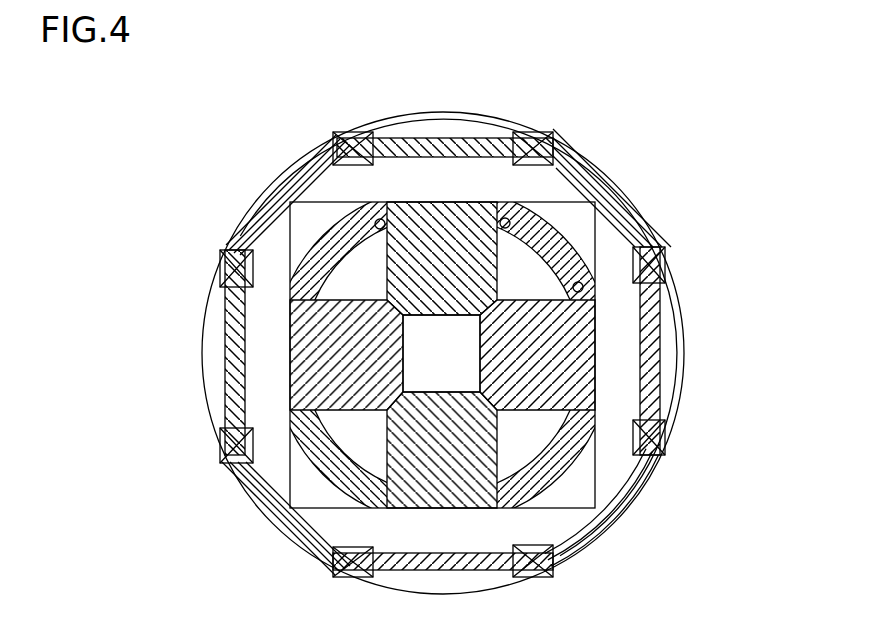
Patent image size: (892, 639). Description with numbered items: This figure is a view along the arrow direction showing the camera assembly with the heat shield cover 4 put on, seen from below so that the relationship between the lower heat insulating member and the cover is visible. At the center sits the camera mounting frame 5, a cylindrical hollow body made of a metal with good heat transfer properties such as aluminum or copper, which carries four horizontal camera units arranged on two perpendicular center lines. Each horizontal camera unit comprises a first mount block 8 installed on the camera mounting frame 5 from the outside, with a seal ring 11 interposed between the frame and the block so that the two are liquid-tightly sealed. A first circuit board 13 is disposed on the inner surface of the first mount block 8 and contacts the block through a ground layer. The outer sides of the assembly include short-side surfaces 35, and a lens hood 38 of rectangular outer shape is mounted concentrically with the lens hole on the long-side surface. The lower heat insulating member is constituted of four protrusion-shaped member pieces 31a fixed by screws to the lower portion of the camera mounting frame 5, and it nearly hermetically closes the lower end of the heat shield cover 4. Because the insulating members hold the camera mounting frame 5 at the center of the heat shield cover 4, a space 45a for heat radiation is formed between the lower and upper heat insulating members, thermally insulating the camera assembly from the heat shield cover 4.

The heat shield cover 4 is at (633, 200).
The camera mounting frame 5 is at (323, 233).
The first mount block 8 is at (277, 527).
The seal ring 11 is at (585, 455).
The first circuit board 13 is at (410, 347).
The member pieces 31a is at (613, 383).
The short-side surface 35 is at (597, 170).
The lens hood 38 is at (648, 236).
The space 45a is at (265, 425).